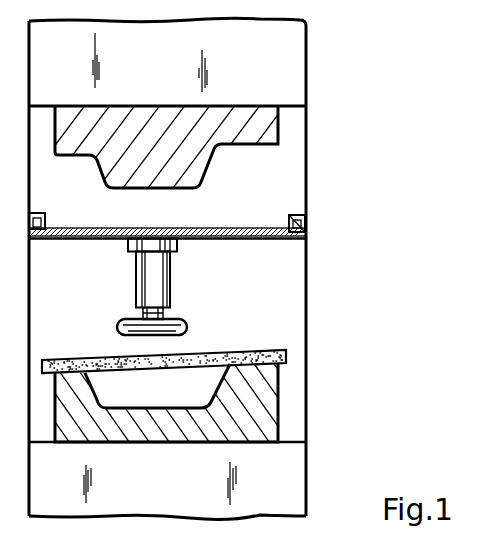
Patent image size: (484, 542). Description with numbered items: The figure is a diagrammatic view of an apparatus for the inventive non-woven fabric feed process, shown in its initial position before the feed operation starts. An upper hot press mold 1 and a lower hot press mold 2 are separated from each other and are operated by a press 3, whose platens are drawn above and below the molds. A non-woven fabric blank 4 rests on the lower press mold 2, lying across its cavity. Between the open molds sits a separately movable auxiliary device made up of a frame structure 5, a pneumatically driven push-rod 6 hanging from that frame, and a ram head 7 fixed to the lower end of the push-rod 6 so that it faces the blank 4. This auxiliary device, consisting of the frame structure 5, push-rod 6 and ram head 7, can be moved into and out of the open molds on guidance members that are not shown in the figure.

The upper hot press mold 1 is at (258, 128).
The lower hot press mold 2 is at (258, 421).
The press 3 is at (296, 70).
The non-woven fabric blank 4 is at (278, 348).
The frame structure 5 is at (306, 244).
The pneumatically driven push-rod 6 is at (148, 277).
The ram head 7 is at (120, 326).